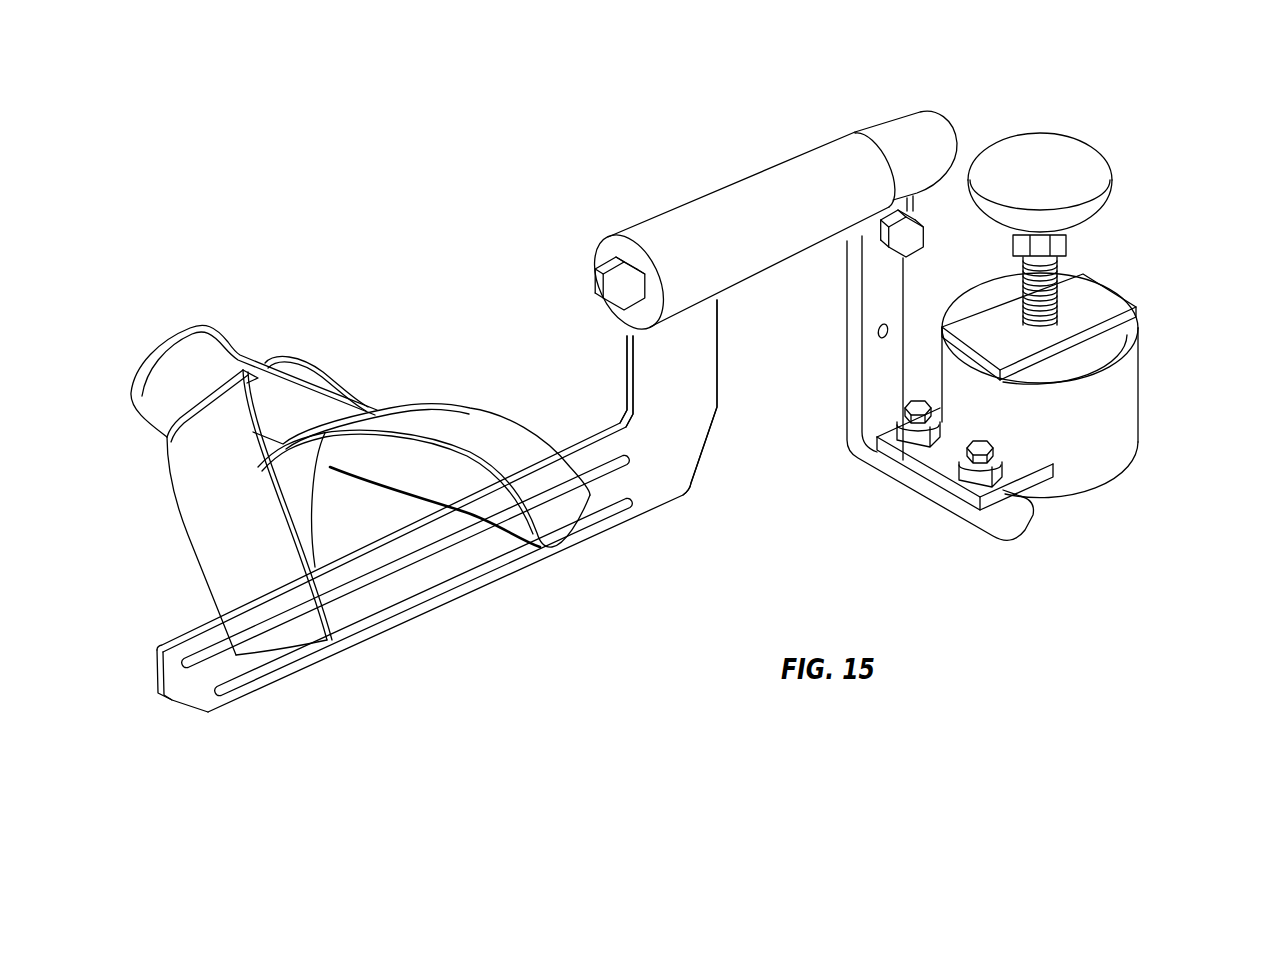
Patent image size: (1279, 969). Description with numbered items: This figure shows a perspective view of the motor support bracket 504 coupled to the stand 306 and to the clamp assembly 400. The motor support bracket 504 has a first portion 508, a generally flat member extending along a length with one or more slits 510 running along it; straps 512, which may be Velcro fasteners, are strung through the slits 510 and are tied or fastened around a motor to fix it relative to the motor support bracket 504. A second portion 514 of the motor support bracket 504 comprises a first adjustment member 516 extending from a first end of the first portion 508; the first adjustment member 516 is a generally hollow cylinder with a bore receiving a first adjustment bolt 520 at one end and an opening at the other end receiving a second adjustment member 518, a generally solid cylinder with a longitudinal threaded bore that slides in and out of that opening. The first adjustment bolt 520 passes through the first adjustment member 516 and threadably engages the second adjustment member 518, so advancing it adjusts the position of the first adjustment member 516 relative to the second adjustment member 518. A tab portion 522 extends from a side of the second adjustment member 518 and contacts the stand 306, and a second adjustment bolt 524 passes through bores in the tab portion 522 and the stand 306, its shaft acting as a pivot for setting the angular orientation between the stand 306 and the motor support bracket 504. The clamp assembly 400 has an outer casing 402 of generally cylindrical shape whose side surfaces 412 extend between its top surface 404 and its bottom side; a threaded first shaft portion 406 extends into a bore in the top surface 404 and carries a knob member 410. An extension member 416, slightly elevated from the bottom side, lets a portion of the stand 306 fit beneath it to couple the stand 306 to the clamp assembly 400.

The stand 306 is at (873, 373).
The clamp assembly 400 is at (1043, 305).
The outer casing 402 is at (1112, 300).
The top surface 404 is at (1021, 351).
The first shaft portion 406 is at (1055, 272).
The knob member 410 is at (1068, 163).
The side surfaces 412 is at (1091, 446).
The extension member 416 is at (940, 450).
The motor support bracket 504 is at (677, 474).
The first portion 508 is at (408, 612).
The slits 510 is at (605, 470).
The straps 512 is at (443, 412).
The second portion 514 is at (735, 196).
The first adjustment member 516 is at (680, 215).
The second adjustment member 518 is at (897, 127).
The first adjustment bolt 520 is at (602, 290).
The tab portion 522 is at (910, 213).
The second adjustment bolt 524 is at (910, 243).